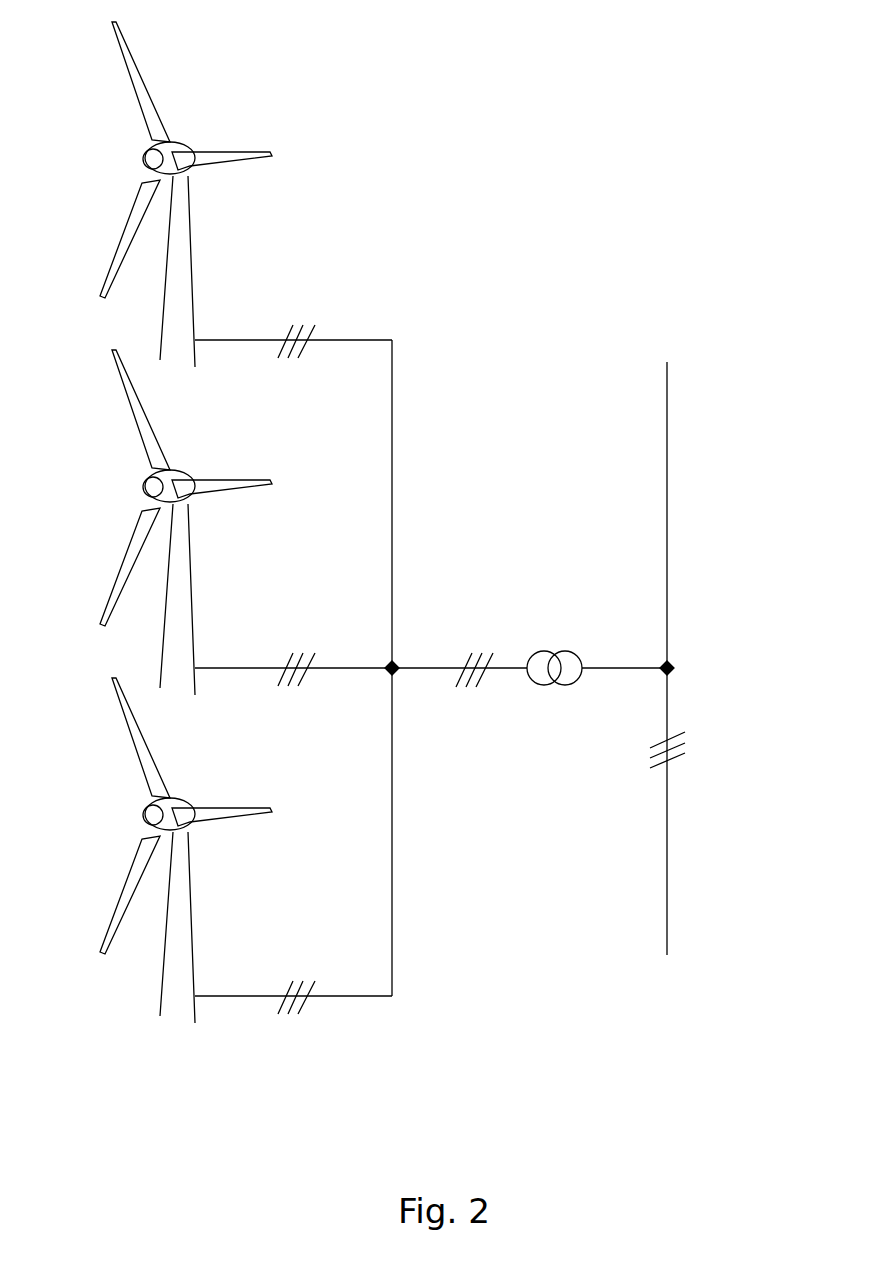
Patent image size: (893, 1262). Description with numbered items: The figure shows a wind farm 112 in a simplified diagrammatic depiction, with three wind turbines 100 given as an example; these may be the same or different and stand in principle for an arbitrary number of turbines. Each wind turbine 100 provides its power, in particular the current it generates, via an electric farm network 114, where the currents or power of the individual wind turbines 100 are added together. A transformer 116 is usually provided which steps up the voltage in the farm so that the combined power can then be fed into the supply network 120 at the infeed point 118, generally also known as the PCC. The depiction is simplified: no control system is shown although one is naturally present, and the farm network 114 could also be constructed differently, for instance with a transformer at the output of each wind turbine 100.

The wind turbine 100 is at (178, 270).
The wind farm 112 is at (520, 295).
The electric farm network 114 is at (418, 668).
The transformer 116 is at (558, 645).
The infeed point 118 is at (677, 652).
The supply network 120 is at (668, 427).